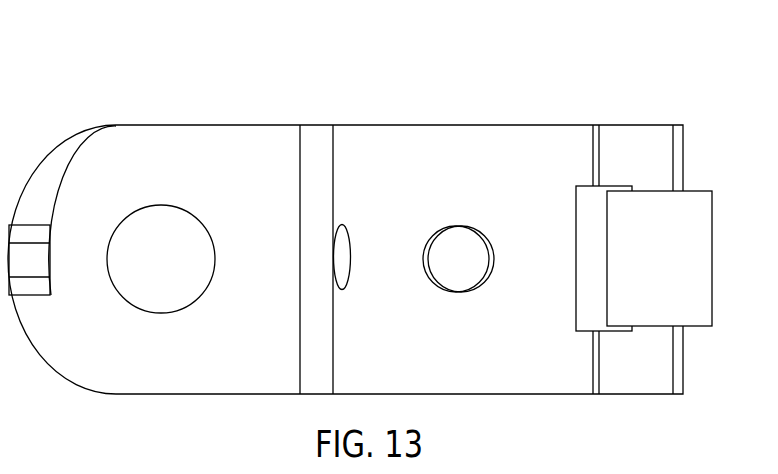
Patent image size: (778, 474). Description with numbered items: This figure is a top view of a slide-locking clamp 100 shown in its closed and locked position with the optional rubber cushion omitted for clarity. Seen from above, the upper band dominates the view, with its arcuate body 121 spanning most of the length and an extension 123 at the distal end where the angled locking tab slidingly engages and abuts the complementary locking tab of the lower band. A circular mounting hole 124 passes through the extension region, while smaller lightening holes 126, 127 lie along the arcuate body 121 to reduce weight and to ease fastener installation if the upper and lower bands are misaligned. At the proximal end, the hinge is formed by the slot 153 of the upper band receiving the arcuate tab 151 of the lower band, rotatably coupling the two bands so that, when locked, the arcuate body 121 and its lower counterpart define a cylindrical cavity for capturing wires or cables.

The clamp 100 is at (78, 72).
The arcuate body 121 is at (498, 133).
The extension 123 is at (222, 131).
The mounting hole 124 is at (148, 308).
The lightening hole 126 is at (344, 291).
The lightening hole 127 is at (461, 286).
The arcuate tab 151 is at (700, 203).
The slot 153 is at (594, 207).